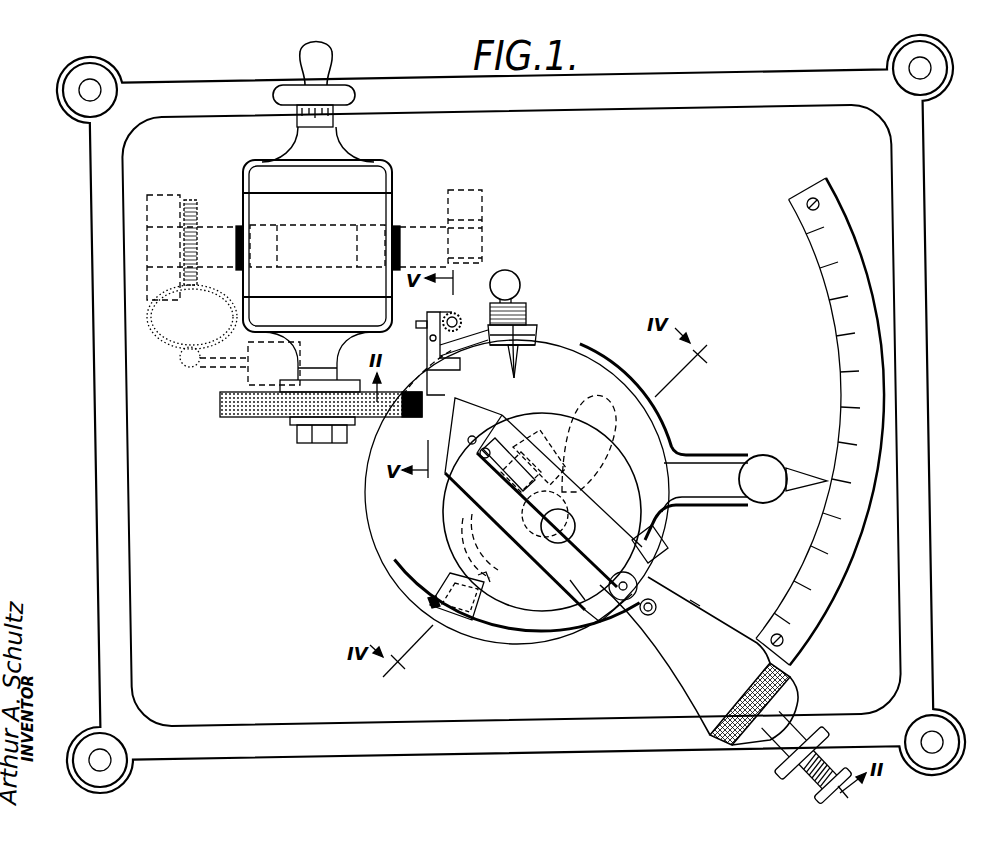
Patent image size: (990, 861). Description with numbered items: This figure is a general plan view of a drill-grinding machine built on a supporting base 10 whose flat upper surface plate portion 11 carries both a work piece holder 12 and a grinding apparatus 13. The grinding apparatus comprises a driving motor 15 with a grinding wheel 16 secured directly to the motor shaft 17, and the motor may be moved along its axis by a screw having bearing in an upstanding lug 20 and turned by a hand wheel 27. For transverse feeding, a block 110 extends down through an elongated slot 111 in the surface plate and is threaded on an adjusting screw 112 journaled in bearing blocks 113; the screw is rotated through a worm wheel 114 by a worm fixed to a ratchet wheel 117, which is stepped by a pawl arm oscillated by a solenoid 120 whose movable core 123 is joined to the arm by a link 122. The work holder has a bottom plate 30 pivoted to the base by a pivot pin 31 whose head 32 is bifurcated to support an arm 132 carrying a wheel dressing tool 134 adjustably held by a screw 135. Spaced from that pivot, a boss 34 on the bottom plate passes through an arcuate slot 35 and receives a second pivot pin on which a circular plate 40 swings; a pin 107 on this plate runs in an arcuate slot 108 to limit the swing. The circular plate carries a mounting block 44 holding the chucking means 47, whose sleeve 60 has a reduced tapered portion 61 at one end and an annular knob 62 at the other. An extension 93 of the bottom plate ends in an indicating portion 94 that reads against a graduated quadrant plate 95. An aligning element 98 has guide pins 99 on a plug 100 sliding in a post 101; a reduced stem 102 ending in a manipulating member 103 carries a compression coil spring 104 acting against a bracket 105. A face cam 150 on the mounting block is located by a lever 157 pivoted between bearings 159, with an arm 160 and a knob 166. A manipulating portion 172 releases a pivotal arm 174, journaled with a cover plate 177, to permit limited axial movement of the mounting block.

The supporting base 10 is at (918, 450).
The upper surface plate portion 11 is at (512, 415).
The work piece holder 12 is at (670, 416).
The grinding apparatus 13 is at (330, 240).
The driving motor 15 is at (250, 208).
The grinding wheel 16 is at (232, 418).
The motor shaft 17 is at (316, 440).
The upstanding lug 20 is at (297, 120).
The hand wheel 27 is at (290, 94).
The bottom plate 30 is at (368, 520).
The pivot pin 31 is at (443, 385).
The head 32 is at (428, 386).
The boss 34 is at (574, 517).
The arcuate slot 35 is at (578, 398).
The circular plate 40 is at (525, 596).
The mounting block 44 is at (572, 580).
The chucking means 47 is at (697, 602).
The sleeve 60 is at (672, 664).
The reduced tapered portion 61 is at (536, 510).
The annular knob 62 is at (783, 705).
The extension 93 is at (726, 456).
The indicating portion 94 is at (798, 476).
The graduated quadrant plate 95 is at (838, 390).
The aligning element 98 is at (528, 322).
The guide pins 99 is at (514, 374).
The plug 100 is at (537, 330).
The post 101 is at (538, 324).
The reduced stem 102 is at (522, 300).
The manipulating member 103 is at (512, 272).
The compression coil spring 104 is at (536, 320).
The bracket 105 is at (468, 319).
The pin 107 is at (483, 565).
The arcuate slot 108 is at (462, 532).
The block 110 is at (366, 228).
The elongated slot 111 is at (358, 248).
The adjusting screw 112 is at (418, 226).
The bearing blocks 113 is at (475, 190).
The worm wheel 114 is at (188, 200).
The ratchet wheel 117 is at (147, 318).
The solenoid 120 is at (246, 372).
The link 122 is at (235, 365).
The movable core 123 is at (248, 372).
The arm 132 is at (450, 368).
The grinding wheel dressing tool 134 is at (420, 320).
The screw 135 is at (443, 312).
The face cam 150 is at (655, 575).
The lever 157 is at (660, 545).
The bearings 159 is at (523, 468).
The arm 160 is at (532, 432).
The knob 166 is at (585, 535).
The manipulating portion 172 is at (452, 612).
The pivotal arm 174 is at (470, 582).
The cover plate 177 is at (430, 600).